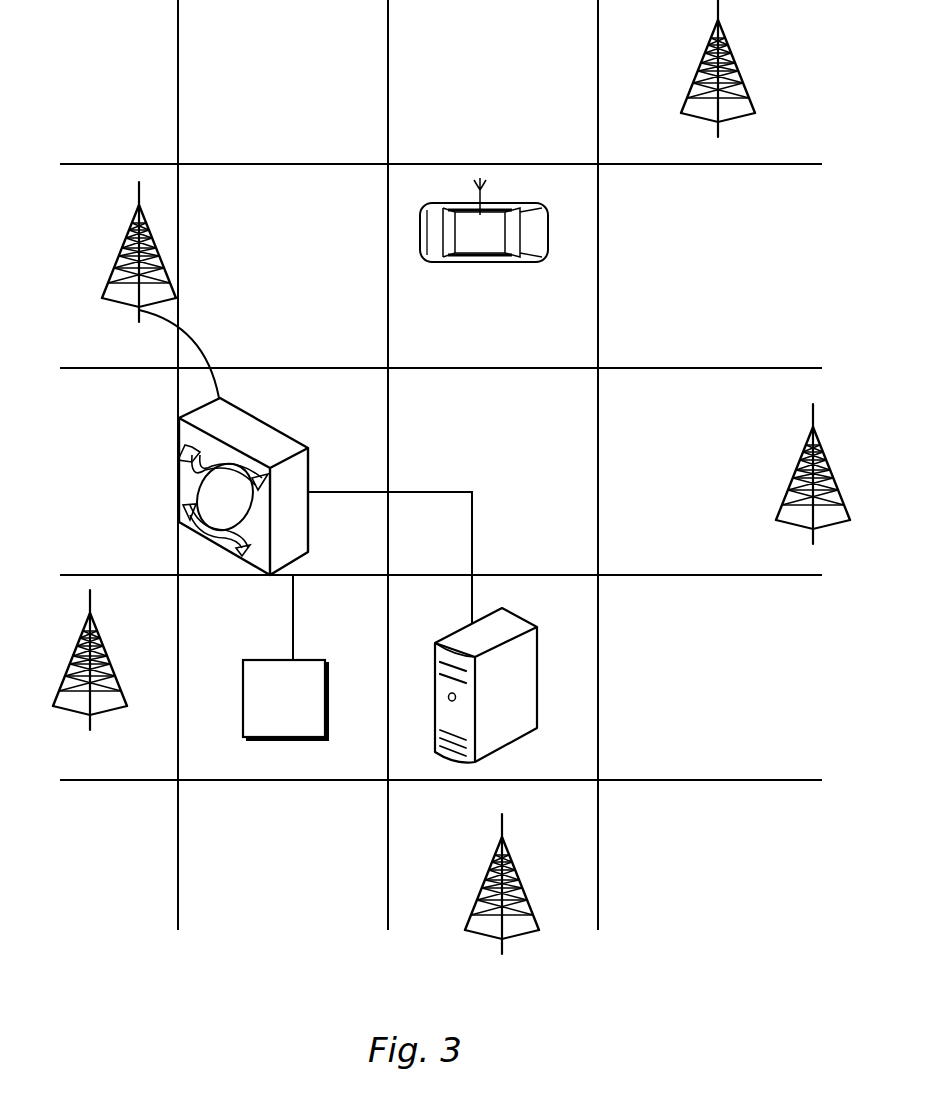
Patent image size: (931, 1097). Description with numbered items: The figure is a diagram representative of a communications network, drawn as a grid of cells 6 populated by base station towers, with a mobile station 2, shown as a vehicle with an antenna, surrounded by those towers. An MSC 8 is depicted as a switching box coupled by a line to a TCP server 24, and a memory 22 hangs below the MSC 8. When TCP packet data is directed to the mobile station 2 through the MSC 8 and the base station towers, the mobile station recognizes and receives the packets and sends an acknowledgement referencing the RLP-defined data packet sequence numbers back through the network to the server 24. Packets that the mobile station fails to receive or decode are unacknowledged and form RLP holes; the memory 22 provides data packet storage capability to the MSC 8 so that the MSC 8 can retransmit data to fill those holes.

The mobile station 2 is at (552, 232).
The cell grid 6 is at (178, 851).
The MSC 8 is at (251, 446).
The memory 22 is at (297, 715).
The TCP server 24 is at (515, 715).